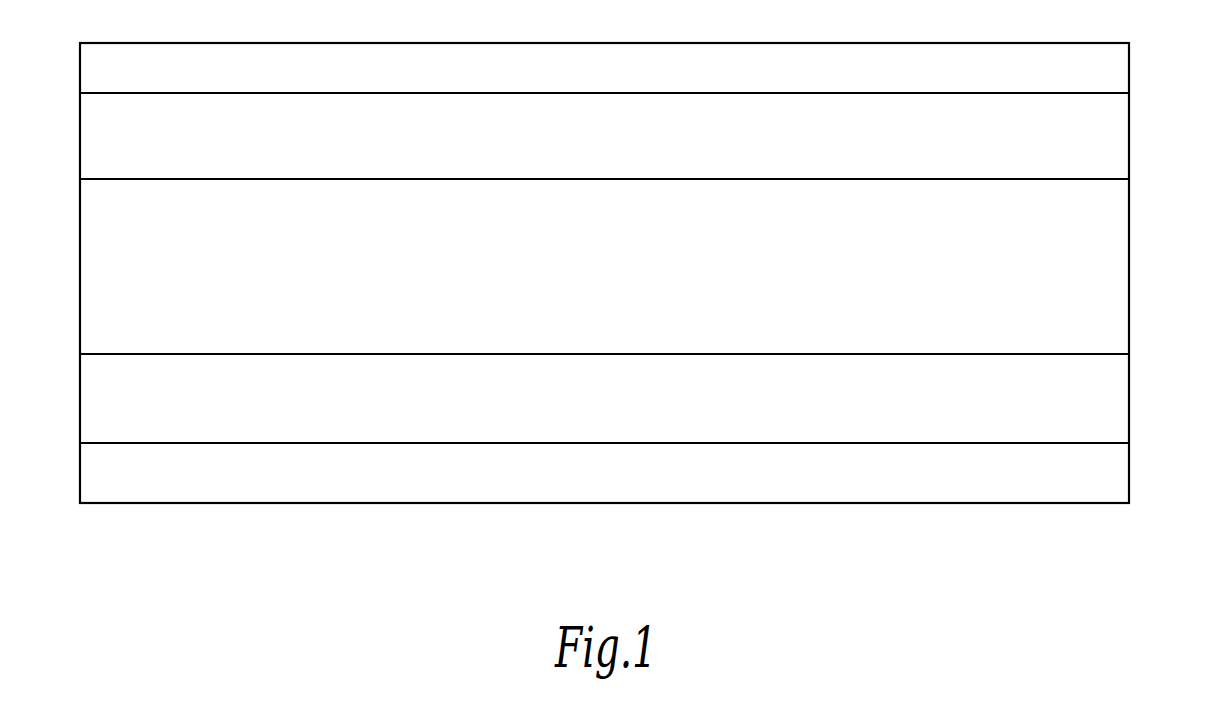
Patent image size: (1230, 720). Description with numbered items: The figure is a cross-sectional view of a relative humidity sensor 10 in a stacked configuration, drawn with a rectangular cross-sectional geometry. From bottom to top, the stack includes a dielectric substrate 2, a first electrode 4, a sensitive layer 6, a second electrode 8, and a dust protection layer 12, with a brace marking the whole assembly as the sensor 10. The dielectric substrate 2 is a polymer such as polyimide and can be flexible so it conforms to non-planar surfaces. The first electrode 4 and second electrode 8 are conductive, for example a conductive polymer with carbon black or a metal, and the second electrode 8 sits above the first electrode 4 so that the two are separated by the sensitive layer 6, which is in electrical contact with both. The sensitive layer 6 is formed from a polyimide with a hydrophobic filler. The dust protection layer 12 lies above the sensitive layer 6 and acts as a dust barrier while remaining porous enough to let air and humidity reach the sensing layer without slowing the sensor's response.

The relative humidity sensor 10 is at (1147, 38).
The dust protection layer 12 is at (79, 52).
The second electrode 8 is at (79, 103).
The sensitive layer 6 is at (79, 190).
The first electrode 4 is at (79, 364).
The dielectric substrate 2 is at (79, 454).